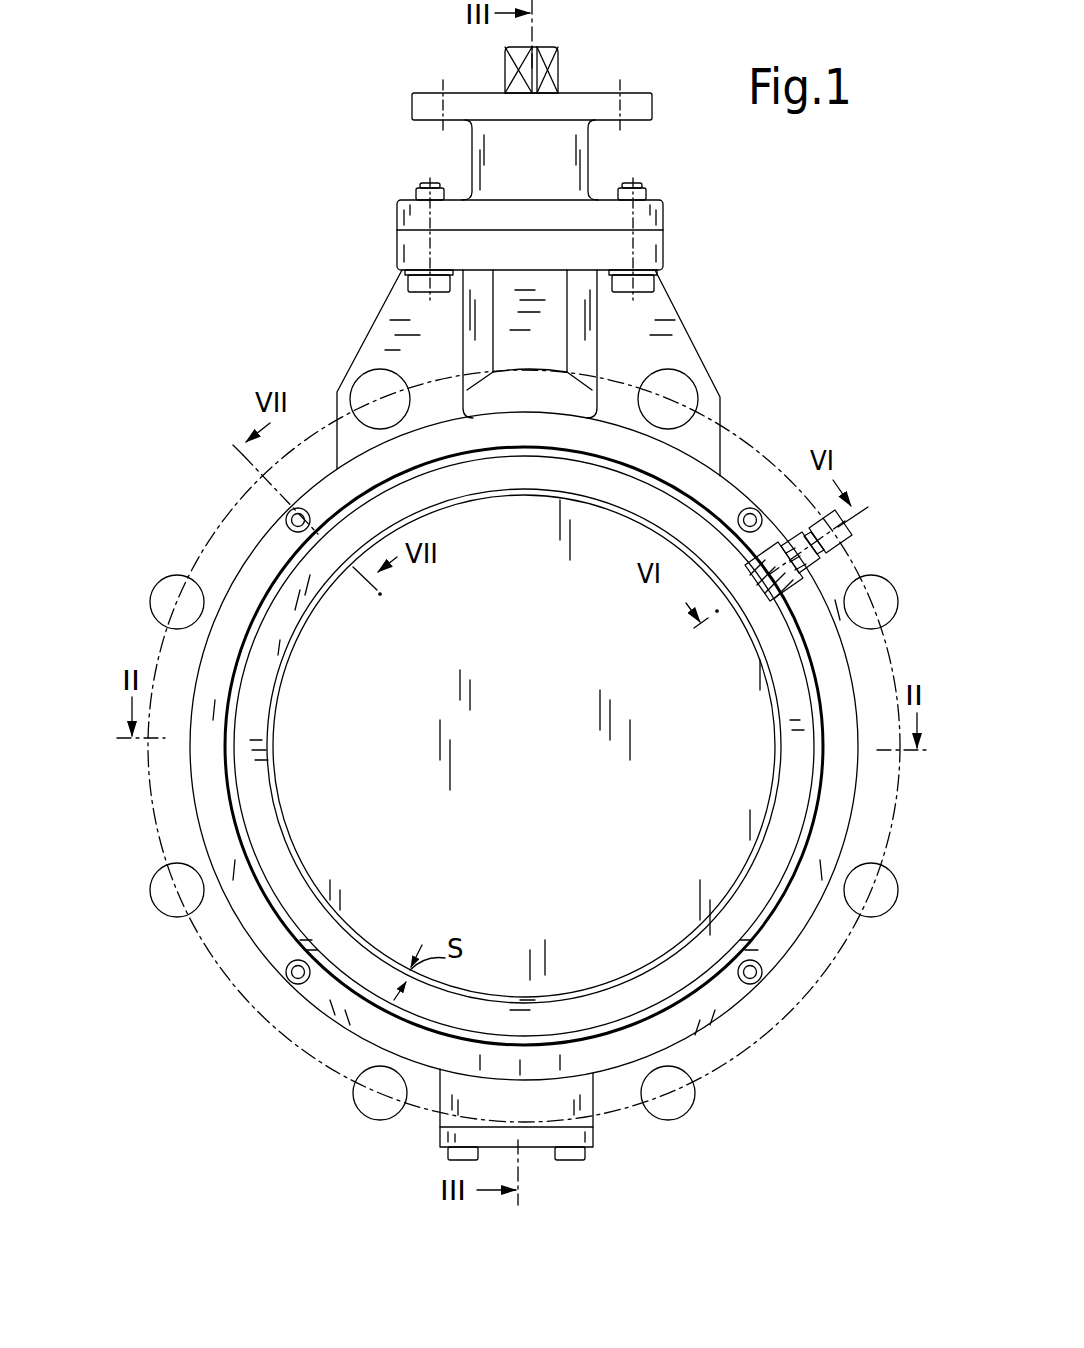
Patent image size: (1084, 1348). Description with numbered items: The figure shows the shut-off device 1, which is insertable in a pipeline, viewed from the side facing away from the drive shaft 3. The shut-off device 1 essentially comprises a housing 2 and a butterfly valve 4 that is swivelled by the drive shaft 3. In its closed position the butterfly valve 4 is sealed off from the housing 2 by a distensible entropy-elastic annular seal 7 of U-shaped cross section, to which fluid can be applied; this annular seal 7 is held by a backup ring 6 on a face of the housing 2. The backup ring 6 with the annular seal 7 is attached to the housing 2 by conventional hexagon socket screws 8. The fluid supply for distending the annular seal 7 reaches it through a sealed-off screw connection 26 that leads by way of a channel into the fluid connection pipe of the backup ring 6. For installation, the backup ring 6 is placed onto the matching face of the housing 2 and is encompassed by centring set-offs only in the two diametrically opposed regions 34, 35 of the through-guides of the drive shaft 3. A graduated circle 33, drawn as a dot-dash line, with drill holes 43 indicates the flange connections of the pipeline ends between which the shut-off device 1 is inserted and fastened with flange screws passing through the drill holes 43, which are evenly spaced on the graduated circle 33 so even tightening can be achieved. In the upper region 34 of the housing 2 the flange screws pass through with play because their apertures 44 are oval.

The shut-off device 1 is at (326, 1080).
The housing 2 is at (653, 342).
The drive shaft 3 is at (556, 72).
The butterfly valve 4 is at (611, 867).
The backup ring 6 is at (842, 682).
The annular seal 7 is at (797, 795).
The hexagon socket screws 8 is at (752, 510).
The screw connection 26 is at (826, 565).
The graduated circle 33 is at (832, 960).
The upper region 34 is at (457, 418).
The diametrically opposed region 35 is at (594, 1082).
The drill holes 43 is at (892, 878).
The apertures 44 is at (405, 418).